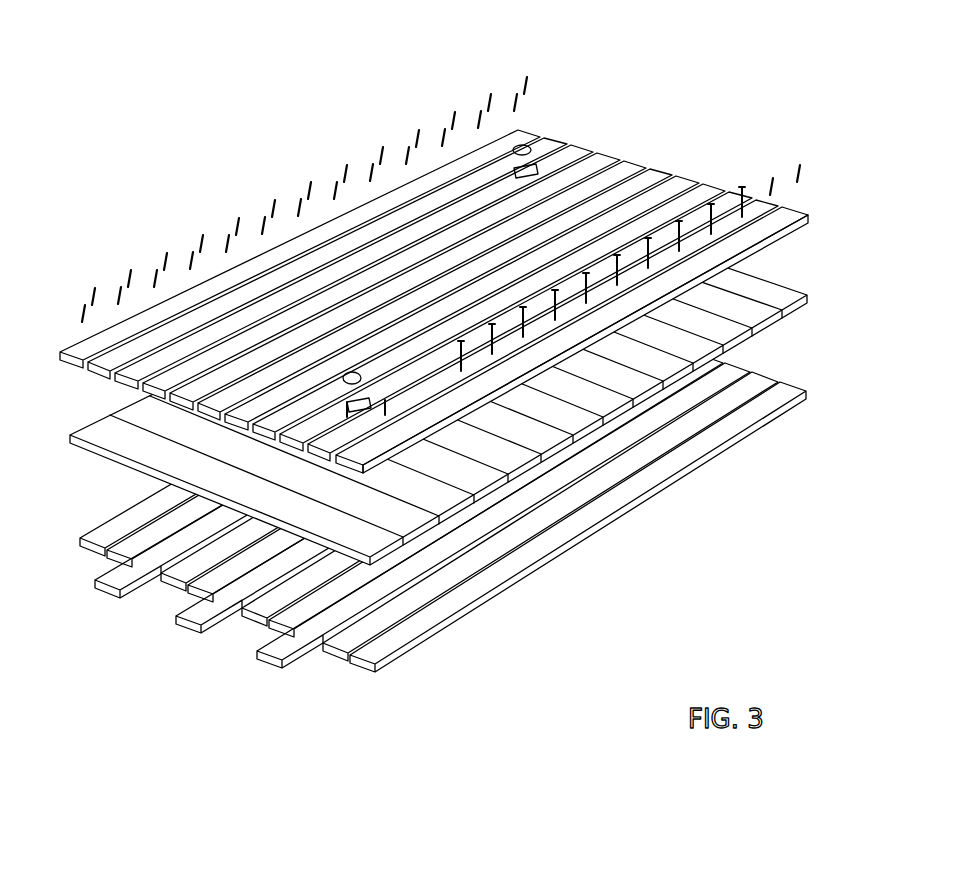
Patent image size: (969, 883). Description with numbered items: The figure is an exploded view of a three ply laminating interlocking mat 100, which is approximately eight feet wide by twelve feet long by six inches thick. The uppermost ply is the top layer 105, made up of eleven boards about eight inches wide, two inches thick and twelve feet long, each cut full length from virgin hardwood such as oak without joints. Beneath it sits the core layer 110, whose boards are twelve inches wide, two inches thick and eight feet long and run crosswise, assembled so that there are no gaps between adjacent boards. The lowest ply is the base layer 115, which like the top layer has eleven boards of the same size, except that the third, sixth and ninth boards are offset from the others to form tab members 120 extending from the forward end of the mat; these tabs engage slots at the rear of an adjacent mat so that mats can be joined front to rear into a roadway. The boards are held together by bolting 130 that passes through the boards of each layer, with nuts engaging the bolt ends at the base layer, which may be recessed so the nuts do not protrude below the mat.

The three ply laminating interlocking mat 100 is at (461, 372).
The top layer 105 is at (625, 138).
The core layer 110 is at (775, 343).
The base layer 115 is at (580, 571).
The tab members 120 is at (265, 672).
The bolting 130 is at (543, 77).